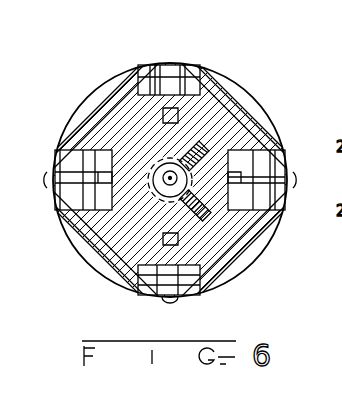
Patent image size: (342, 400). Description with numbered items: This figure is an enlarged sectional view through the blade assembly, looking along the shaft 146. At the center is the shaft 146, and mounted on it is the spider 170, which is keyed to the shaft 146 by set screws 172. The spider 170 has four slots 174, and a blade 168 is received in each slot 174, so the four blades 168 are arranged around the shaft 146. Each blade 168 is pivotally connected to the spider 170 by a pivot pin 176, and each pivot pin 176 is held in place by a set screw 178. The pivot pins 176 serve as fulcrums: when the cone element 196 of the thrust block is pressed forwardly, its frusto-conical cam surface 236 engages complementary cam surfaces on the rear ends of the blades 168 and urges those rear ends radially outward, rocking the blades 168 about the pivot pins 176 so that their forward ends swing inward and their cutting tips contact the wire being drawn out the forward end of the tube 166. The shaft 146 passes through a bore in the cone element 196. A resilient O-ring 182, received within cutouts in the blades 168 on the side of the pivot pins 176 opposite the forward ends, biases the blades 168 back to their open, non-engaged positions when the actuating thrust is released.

The shaft 146 is at (160, 200).
The tube 166 is at (151, 195).
The blades 168 is at (170, 64).
The spider 170 is at (257, 140).
The set screws 172 is at (221, 157).
The slots 174 is at (222, 93).
The pivot pins 176 is at (188, 72).
The set screws 178 is at (77, 160).
The resilient O-ring 182 is at (110, 108).
The cone element 196 is at (213, 155).
The frusto-conical cam surface 236 is at (231, 267).